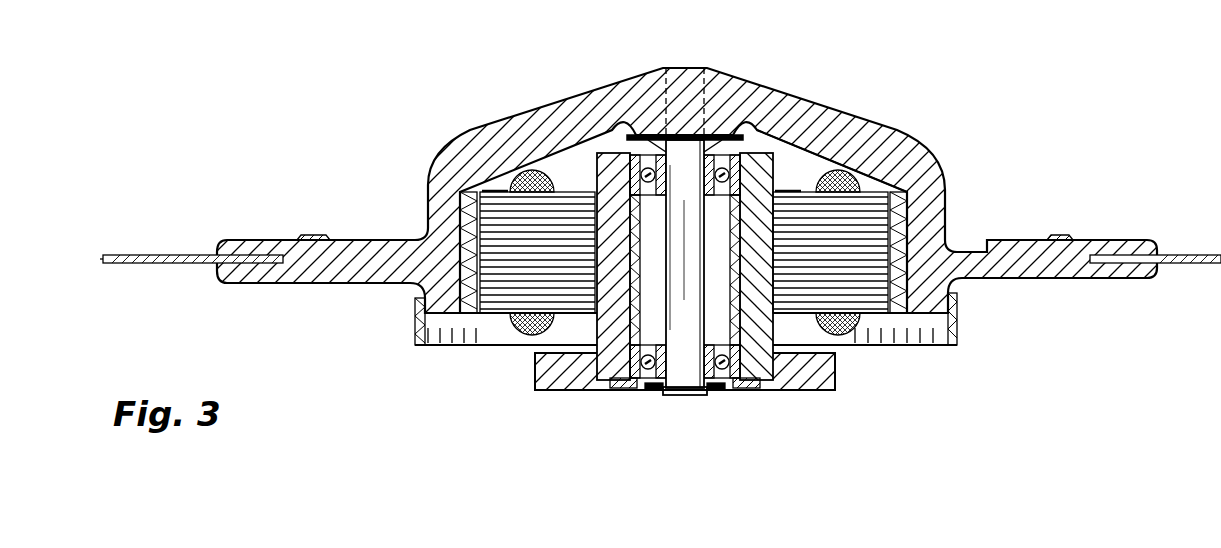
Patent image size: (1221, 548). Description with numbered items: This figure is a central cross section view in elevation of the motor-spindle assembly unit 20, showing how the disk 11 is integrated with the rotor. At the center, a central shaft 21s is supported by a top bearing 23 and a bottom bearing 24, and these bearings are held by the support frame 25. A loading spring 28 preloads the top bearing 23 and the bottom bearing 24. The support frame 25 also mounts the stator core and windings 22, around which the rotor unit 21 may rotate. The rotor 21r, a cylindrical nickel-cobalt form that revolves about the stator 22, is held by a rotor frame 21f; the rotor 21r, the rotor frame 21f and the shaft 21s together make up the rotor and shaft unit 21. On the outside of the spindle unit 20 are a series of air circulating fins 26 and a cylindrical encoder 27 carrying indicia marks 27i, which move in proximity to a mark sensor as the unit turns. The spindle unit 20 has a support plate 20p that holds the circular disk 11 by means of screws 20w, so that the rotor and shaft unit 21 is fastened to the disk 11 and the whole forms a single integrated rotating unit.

The disk 11 is at (153, 252).
The motor-spindle unit 20 is at (660, 227).
The screws 20w is at (313, 235).
The support plate 20p is at (1130, 242).
The rotor and shaft unit 21 is at (686, 62).
The rotor frame 21f is at (853, 152).
The rotor 21r is at (905, 222).
The central shaft 21s is at (685, 367).
The stator core and windings 22 is at (515, 296).
The top bearing 23 is at (790, 186).
The bottom bearing 24 is at (737, 363).
The support frame 25 is at (567, 383).
The air circulating fins 26 is at (503, 133).
The cylindrical encoder 27 is at (712, 345).
The indicia marks 27i is at (907, 342).
The loading spring 28 is at (737, 138).